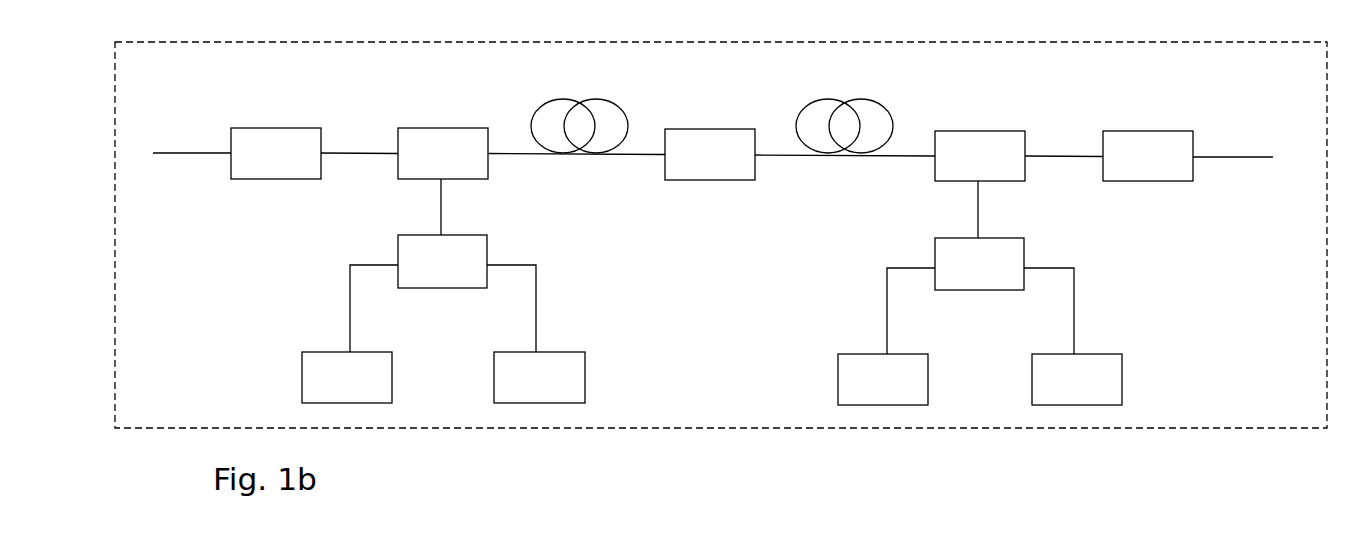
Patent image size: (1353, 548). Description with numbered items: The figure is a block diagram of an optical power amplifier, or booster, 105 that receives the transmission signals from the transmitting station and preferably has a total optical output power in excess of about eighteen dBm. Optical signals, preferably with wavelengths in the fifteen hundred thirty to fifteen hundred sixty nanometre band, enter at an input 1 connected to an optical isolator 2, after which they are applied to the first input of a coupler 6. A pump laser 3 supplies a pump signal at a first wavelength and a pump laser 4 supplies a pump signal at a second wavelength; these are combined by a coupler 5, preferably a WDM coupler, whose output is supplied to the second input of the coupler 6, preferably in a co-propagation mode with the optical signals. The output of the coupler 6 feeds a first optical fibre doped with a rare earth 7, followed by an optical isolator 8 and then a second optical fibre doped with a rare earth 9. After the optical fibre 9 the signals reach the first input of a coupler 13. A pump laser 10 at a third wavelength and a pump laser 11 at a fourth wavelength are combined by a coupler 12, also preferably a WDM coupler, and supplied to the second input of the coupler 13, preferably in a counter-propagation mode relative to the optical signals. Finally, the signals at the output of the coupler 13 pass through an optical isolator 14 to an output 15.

The power amplifier 105 is at (717, 42).
The input 1 is at (195, 152).
The optical isolator 2 is at (274, 128).
The pump laser 3 is at (322, 352).
The pump laser 4 is at (565, 352).
The coupler 5 is at (413, 235).
The coupler 6 is at (440, 128).
The first optical fibre doped with a rare earth 7 is at (561, 99).
The optical isolator 8 is at (708, 129).
The second optical fibre doped with a rare earth 9 is at (826, 99).
The pump laser 10 is at (852, 354).
The pump laser 11 is at (1102, 354).
The coupler 12 is at (944, 238).
The coupler 13 is at (977, 131).
The optical isolator 14 is at (1140, 131).
The output 15 is at (1240, 157).